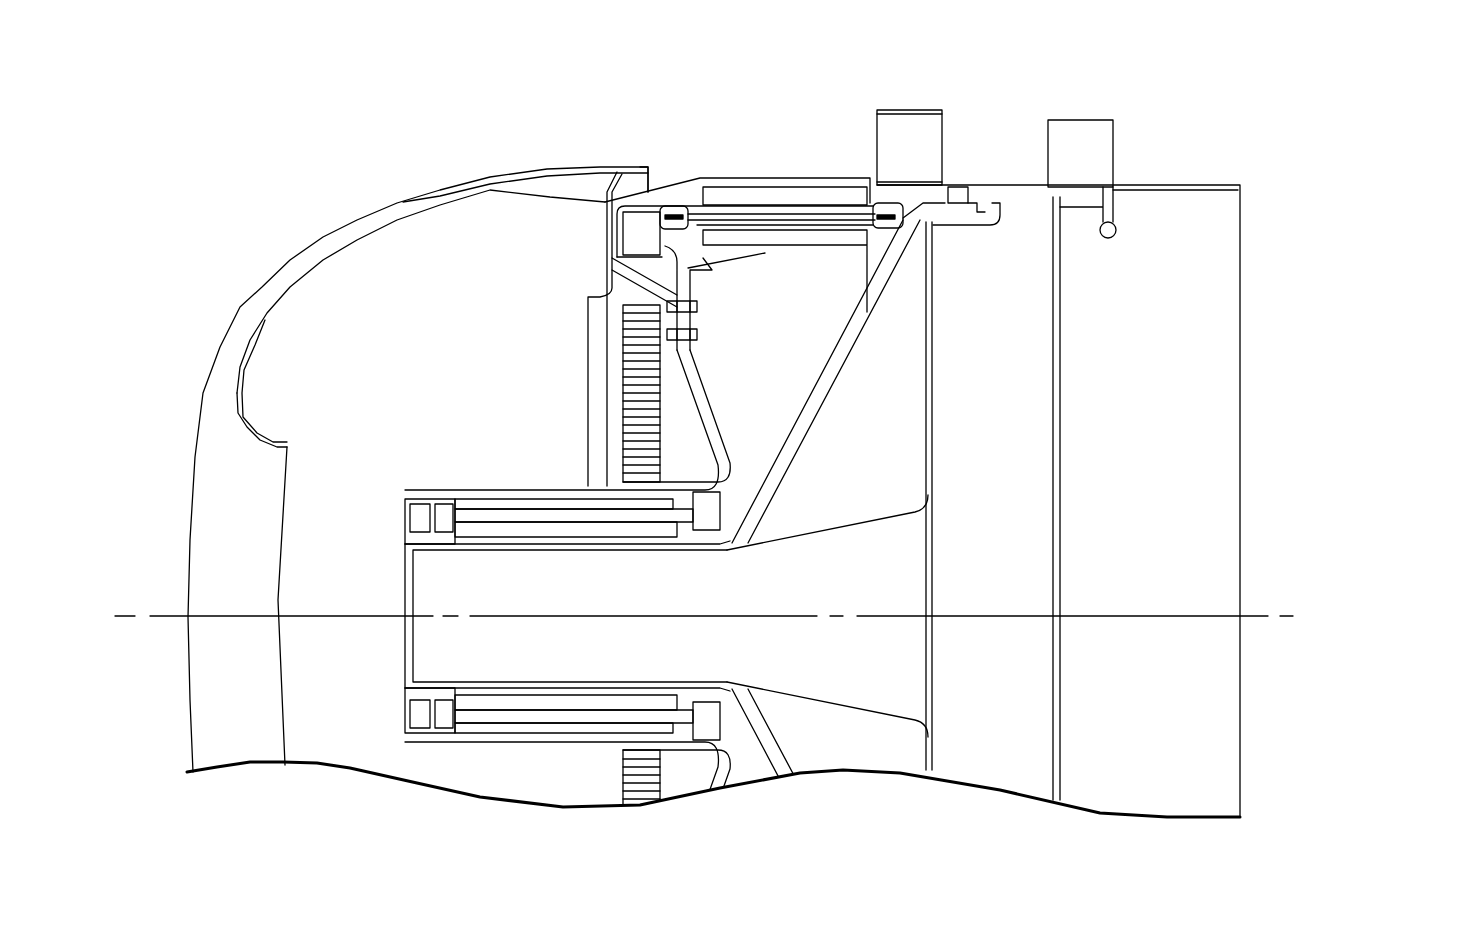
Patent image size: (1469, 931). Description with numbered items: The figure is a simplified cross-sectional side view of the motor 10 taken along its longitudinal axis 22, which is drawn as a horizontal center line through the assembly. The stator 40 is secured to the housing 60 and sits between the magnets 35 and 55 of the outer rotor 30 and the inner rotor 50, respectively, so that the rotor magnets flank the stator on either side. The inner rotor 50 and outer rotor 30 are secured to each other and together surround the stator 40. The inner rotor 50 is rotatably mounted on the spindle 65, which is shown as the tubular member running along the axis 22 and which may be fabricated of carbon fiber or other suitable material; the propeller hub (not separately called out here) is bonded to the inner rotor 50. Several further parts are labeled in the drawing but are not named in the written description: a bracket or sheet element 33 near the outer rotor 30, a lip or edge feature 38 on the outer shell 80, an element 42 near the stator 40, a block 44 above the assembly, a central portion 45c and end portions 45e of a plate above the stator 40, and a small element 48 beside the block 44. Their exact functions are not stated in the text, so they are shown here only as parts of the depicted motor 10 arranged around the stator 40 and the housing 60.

The motor 10 is at (408, 116).
The longitudinal axis 22 is at (152, 613).
The outer rotor 30 is at (777, 177).
The support strut 33 is at (604, 199).
The magnets 35 is at (822, 194).
The nacelle lip 38 is at (652, 166).
The stator 40 is at (757, 208).
The box 42 is at (640, 236).
The module 44 is at (903, 126).
The plate center 45c is at (805, 221).
The seal 45e is at (683, 212).
The spacer 48 is at (957, 192).
The inner rotor 50 is at (702, 445).
The magnets 55 is at (736, 237).
The housing 60 is at (777, 432).
The spindle 65 is at (438, 573).
The nacelle 80 is at (263, 298).